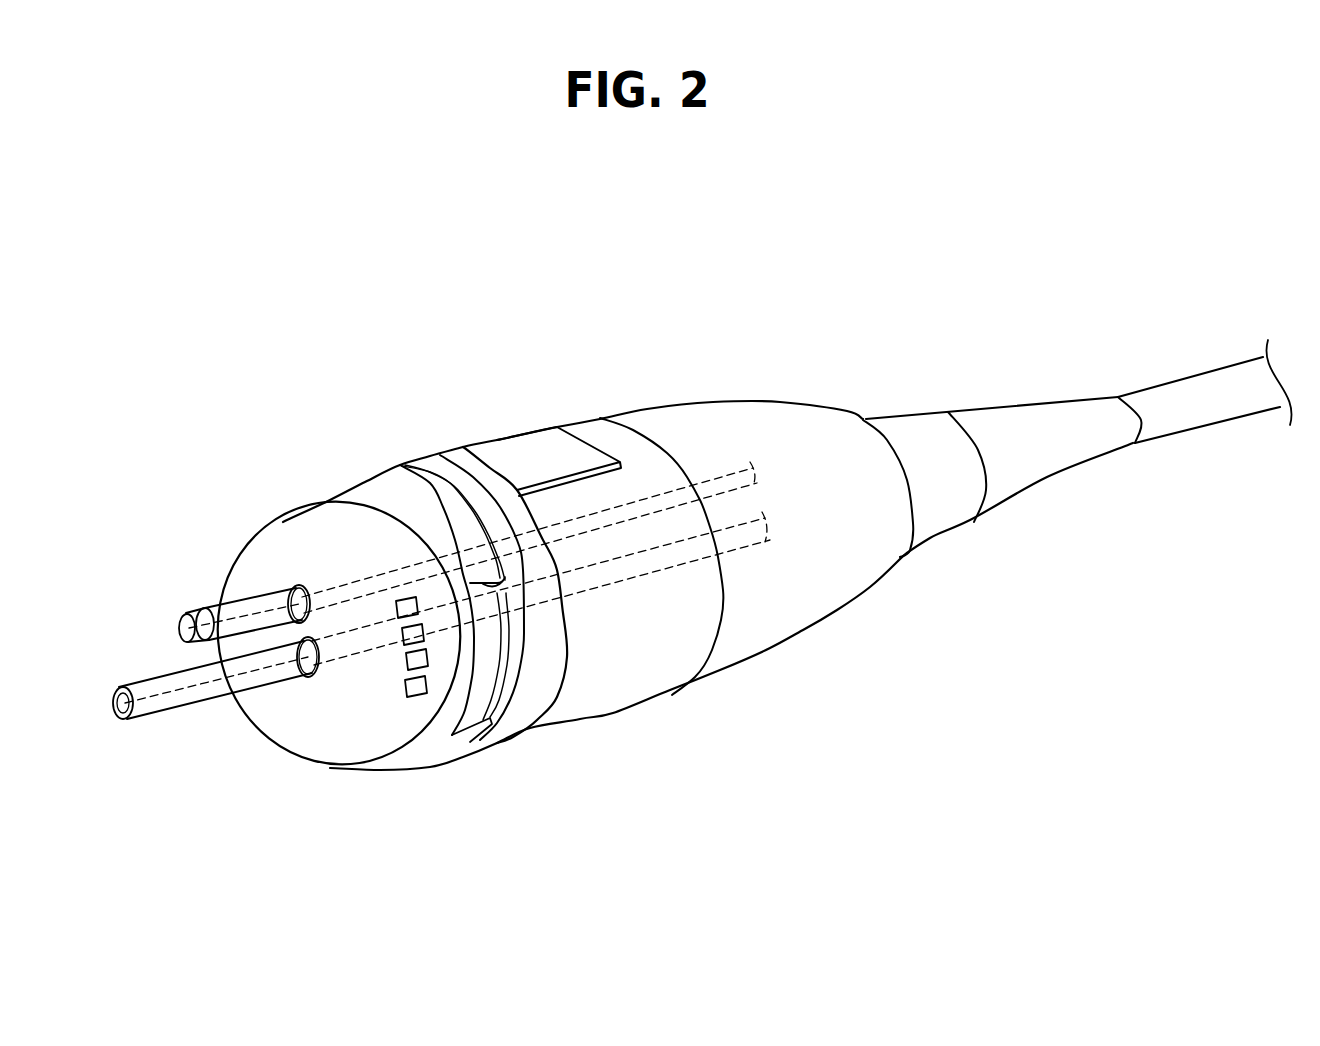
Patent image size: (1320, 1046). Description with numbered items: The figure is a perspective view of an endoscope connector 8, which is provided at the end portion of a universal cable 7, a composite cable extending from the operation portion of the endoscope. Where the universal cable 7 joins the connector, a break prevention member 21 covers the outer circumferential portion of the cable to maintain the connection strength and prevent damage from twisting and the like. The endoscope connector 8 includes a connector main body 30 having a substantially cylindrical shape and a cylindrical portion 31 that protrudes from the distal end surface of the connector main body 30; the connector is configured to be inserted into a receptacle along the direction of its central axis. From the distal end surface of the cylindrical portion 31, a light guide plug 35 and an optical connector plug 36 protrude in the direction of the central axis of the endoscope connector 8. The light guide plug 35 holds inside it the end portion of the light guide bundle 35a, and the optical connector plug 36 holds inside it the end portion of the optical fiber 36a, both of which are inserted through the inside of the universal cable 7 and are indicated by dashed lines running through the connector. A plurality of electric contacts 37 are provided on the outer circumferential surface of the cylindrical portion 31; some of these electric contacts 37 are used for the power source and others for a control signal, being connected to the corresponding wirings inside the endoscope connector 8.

The universal cable 7 is at (1202, 373).
The endoscope connector 8 is at (470, 372).
The break prevention member 21 is at (1028, 400).
The connector main body 30 is at (377, 470).
The cylindrical portion 31 is at (330, 513).
The light guide plug 35 is at (167, 712).
The light guide bundle 35a is at (220, 690).
The optical connector plug 36 is at (210, 608).
The optical fiber 36a is at (243, 600).
The electric contacts 37 is at (396, 608).